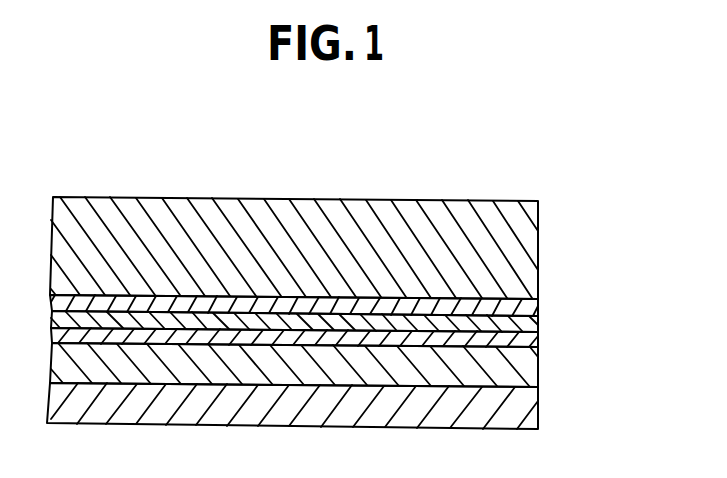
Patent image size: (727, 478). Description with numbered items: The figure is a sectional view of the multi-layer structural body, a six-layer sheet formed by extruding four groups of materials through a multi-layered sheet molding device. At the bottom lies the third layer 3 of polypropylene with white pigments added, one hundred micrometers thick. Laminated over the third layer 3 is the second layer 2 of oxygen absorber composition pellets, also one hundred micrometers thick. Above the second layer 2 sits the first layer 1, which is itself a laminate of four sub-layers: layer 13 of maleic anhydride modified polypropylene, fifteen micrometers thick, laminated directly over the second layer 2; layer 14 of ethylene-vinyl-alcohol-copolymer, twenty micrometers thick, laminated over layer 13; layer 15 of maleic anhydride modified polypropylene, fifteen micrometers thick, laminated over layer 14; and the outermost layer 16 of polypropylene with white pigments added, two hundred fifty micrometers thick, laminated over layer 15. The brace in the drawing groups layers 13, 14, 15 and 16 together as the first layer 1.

The first layer 1 is at (350, 280).
The second layer 2 is at (540, 365).
The third layer 3 is at (540, 408).
The layer of maleic anhydride modified polypropylene 13 is at (325, 344).
The layer of ethylene-vinyl-alcohol-copolymer 14 is at (536, 325).
The layer of maleic anhydride modified polypropylene 15 is at (538, 308).
The layer of polypropylene with white pigments added 16 is at (537, 233).